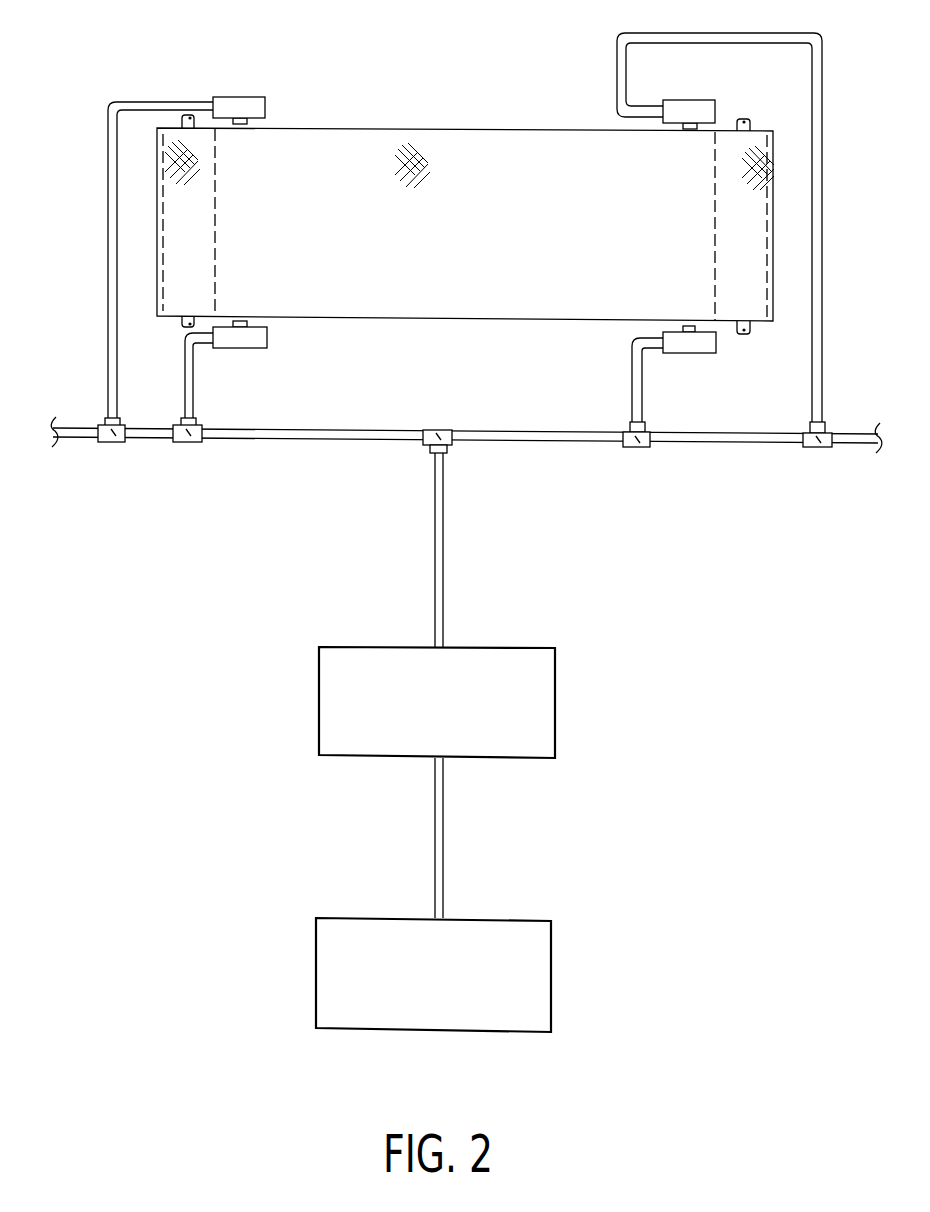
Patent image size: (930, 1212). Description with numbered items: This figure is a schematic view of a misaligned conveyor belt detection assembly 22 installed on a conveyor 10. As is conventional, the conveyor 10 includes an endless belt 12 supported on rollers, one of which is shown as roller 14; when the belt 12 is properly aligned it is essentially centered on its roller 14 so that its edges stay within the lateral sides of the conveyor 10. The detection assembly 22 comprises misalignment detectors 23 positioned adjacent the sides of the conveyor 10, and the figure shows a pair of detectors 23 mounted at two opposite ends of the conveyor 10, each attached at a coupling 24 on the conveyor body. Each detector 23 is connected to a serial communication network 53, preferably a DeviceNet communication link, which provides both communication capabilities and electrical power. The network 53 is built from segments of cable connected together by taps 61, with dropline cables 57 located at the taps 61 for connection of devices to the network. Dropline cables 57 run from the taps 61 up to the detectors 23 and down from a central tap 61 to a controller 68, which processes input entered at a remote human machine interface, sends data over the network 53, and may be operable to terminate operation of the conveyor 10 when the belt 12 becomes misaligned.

The conveyor 10 is at (780, 170).
The endless belt 12 is at (398, 156).
The roller 14 is at (216, 213).
The misaligned conveyor belt detection assembly 22 is at (556, 91).
The misalignment detector 23 is at (253, 95).
The coupling 24 is at (265, 122).
The serial communication network 53 is at (417, 456).
The dropline cable 57 is at (186, 391).
The tap 61 is at (183, 443).
The controller 68 is at (558, 692).